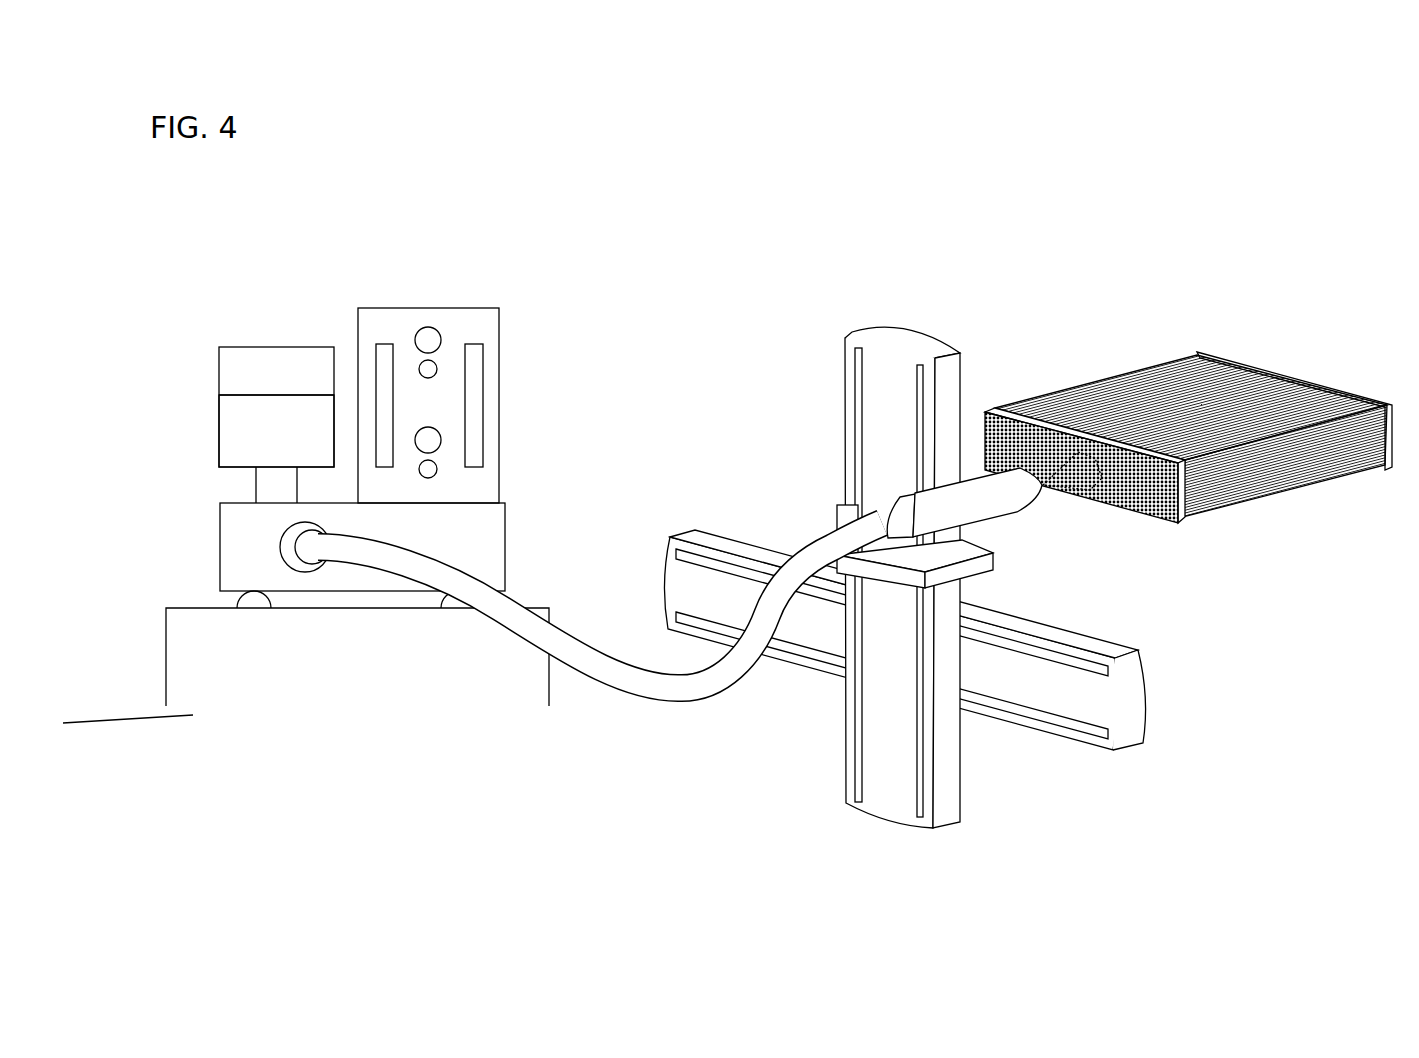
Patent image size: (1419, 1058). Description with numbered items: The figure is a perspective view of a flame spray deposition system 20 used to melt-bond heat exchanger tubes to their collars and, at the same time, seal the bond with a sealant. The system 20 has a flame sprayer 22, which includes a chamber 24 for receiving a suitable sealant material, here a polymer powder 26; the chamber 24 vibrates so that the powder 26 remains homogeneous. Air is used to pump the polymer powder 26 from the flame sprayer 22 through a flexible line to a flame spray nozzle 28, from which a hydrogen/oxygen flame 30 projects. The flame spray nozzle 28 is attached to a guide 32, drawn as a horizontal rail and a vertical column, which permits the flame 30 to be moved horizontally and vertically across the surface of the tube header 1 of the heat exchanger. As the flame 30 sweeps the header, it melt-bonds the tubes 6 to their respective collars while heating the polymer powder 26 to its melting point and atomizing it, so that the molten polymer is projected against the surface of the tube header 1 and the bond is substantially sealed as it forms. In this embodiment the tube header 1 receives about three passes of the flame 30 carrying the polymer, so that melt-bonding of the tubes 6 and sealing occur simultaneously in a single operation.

The flame spray deposition system 20 is at (703, 200).
The flame sprayer 22 is at (395, 287).
The chamber 24 is at (255, 348).
The polymer powder 26 is at (253, 429).
The flame spray nozzle 28 is at (1003, 513).
The hydrogen/oxygen flame 30 is at (1077, 501).
The guide 32 is at (836, 427).
The tubes 6 is at (1096, 381).
The tube header 1 is at (1188, 532).